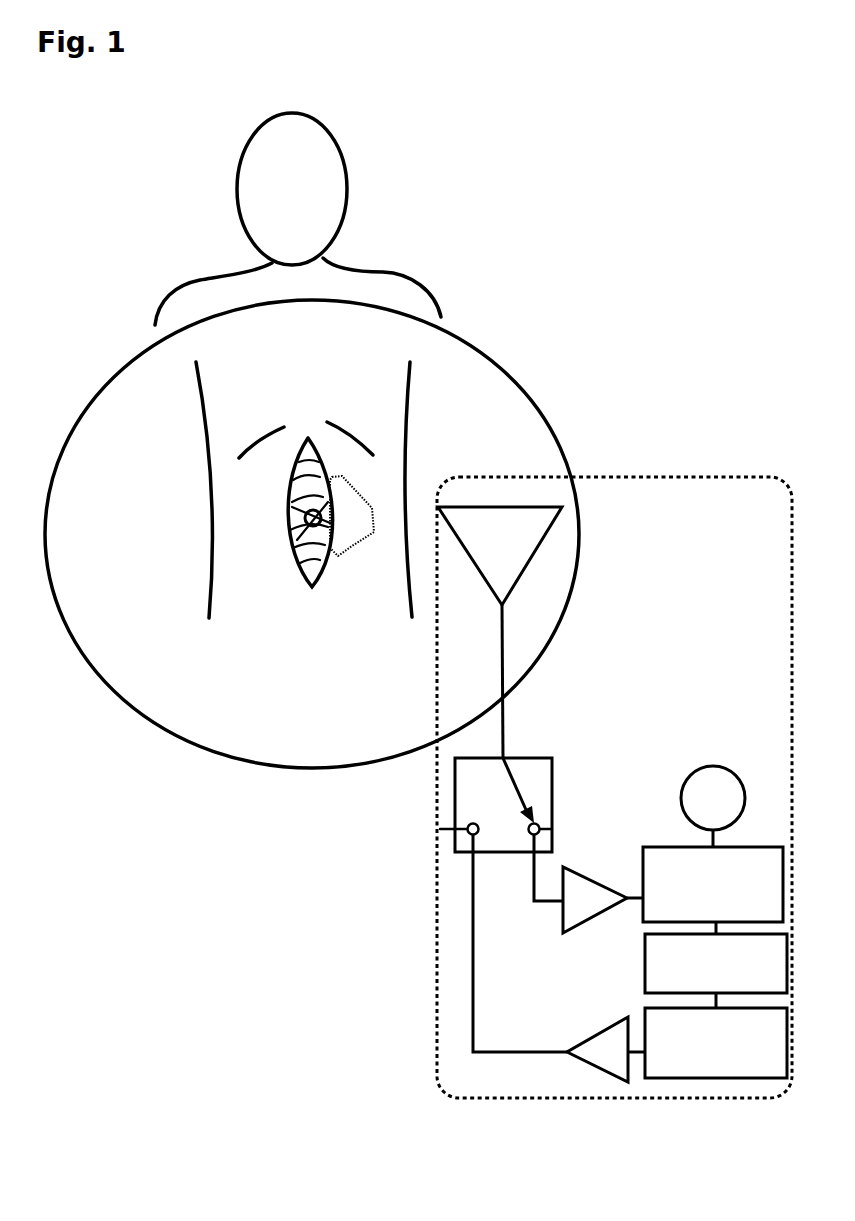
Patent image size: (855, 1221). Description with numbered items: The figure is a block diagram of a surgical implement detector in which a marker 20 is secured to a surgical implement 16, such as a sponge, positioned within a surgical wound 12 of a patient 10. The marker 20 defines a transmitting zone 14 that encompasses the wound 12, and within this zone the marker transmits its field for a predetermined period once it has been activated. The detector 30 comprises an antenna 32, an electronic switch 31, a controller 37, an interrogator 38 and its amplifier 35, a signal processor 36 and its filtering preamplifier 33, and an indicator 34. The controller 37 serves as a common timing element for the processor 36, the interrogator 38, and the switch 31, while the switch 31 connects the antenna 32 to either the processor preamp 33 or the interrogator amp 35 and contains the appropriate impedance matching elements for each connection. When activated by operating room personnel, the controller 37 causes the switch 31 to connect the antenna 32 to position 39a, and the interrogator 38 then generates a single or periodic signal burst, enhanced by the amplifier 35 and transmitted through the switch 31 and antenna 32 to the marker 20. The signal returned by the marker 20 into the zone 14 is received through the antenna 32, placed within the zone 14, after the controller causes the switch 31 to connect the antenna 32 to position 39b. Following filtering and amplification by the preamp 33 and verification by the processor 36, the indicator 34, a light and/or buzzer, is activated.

The patient 10 is at (383, 272).
The surgical wound 12 is at (287, 542).
The transmitting zone 14 is at (312, 534).
The surgical implement 16 is at (342, 537).
The marker 20 is at (321, 514).
The detector 30 is at (738, 442).
The electronic switch 31 is at (518, 841).
The antenna 32 is at (513, 554).
The filtering preamplifier 33 is at (600, 912).
The indicator 34 is at (727, 810).
The amplifier 35 is at (625, 1064).
The signal processor 36 is at (700, 919).
The controller 37 is at (703, 990).
The interrogator 38 is at (703, 1074).
The switch position 39a is at (440, 829).
The switch position 39b is at (552, 829).